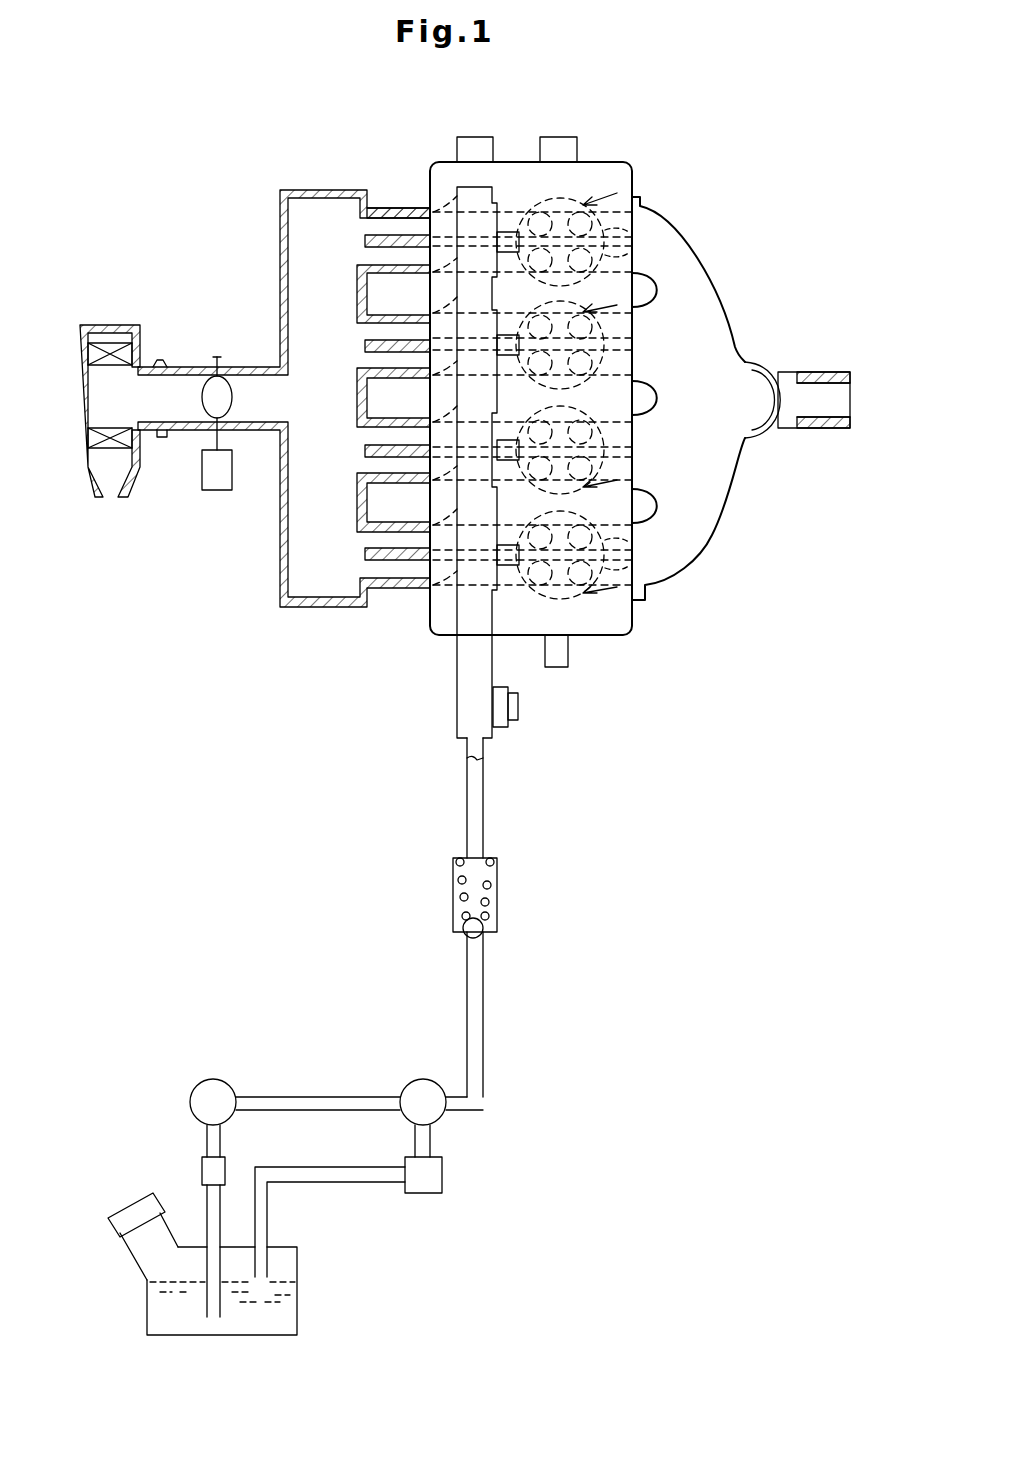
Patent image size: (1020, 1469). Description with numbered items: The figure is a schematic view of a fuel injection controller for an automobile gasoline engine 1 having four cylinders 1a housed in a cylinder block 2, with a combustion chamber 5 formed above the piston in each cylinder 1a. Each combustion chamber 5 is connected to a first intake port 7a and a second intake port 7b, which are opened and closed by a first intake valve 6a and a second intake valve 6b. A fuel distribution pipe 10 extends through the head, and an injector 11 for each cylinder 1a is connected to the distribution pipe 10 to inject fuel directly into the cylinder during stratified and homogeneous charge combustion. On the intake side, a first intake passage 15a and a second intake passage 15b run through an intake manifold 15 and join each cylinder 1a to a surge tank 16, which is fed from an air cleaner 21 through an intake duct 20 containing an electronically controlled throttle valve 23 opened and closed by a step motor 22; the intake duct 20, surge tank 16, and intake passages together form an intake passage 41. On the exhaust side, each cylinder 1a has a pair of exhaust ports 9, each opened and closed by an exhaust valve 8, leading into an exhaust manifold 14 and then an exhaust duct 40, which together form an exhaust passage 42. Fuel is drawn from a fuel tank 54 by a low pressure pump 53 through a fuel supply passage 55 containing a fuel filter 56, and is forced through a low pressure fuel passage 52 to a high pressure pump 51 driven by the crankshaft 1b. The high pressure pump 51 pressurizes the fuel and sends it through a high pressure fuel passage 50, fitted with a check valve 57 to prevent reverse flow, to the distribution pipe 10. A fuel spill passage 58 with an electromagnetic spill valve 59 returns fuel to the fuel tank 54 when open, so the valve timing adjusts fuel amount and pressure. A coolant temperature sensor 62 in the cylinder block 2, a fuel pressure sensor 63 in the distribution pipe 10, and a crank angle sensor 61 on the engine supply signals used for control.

The engine 1 is at (645, 170).
The cylinder 1a is at (655, 610).
The crankshaft 1b is at (568, 660).
The cylinder block 2 is at (600, 636).
The combustion chamber 5 is at (575, 425).
The first intake valve 6a is at (575, 590).
The second intake valve 6b is at (590, 480).
The first intake port 7a is at (492, 596).
The second intake port 7b is at (484, 497).
The exhaust valve 8 is at (640, 455).
The exhaust port 9 is at (638, 572).
The fuel distribution pipe 10 is at (457, 670).
The injector 11 is at (510, 440).
The exhaust manifold 14 is at (728, 455).
The intake manifold 15 is at (382, 590).
The first intake passage 15a is at (403, 265).
The second intake passage 15b is at (394, 216).
The surge tank 16 is at (280, 216).
The intake duct 20 is at (180, 367).
The air cleaner 21 is at (80, 443).
The step motor 22 is at (200, 472).
The throttle valve 23 is at (234, 400).
The exhaust duct 40 is at (815, 430).
The intake passage 41 is at (240, 378).
The exhaust passage 42 is at (825, 372).
The high pressure fuel passage 50 is at (478, 822).
The high pressure pump 51 is at (440, 1118).
The low pressure fuel passage 52 is at (336, 1098).
The low pressure pump 53 is at (210, 1078).
The fuel tank 54 is at (300, 1275).
The fuel supply passage 55 is at (221, 1138).
The fuel filter 56 is at (200, 1170).
The check valve 57 is at (497, 898).
The fuel spill passage 58 is at (366, 1183).
The electromagnetic spill valve 59 is at (442, 1177).
The crank angle sensor 61 is at (560, 137).
The coolant temperature sensor 62 is at (476, 137).
The fuel pressure sensor 63 is at (518, 705).